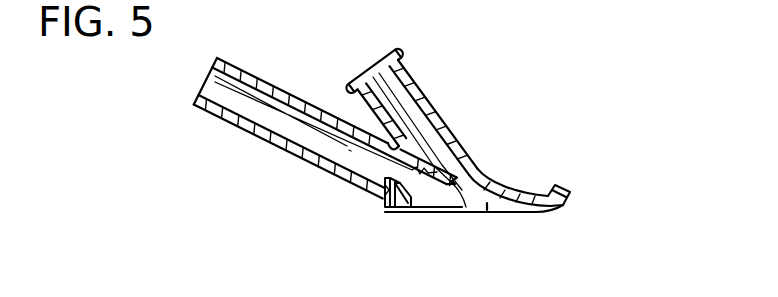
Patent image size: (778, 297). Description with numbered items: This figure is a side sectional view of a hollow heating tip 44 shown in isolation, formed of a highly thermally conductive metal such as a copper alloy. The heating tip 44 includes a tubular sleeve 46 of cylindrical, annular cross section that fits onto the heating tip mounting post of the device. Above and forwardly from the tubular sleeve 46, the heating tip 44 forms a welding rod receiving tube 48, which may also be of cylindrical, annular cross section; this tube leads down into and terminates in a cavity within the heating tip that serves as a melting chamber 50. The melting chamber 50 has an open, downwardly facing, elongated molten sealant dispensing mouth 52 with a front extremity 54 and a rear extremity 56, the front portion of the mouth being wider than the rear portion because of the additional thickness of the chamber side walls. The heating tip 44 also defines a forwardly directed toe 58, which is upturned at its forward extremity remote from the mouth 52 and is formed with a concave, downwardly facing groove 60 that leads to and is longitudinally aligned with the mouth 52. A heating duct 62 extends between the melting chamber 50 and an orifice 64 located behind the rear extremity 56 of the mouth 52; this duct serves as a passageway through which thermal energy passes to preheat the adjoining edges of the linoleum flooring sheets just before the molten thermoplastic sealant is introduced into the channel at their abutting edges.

The hollow heating tip 44 is at (474, 100).
The tubular sleeve 46 is at (246, 133).
The welding rod receiving tube 48 is at (408, 74).
The melting chamber 50 is at (449, 193).
The molten sealant dispensing mouth 52 is at (487, 205).
The front extremity 54 is at (540, 213).
The rear extremity 56 is at (420, 213).
The toe 58 is at (553, 183).
The groove 60 is at (563, 203).
The heating duct 62 is at (386, 195).
The orifice 64 is at (393, 211).